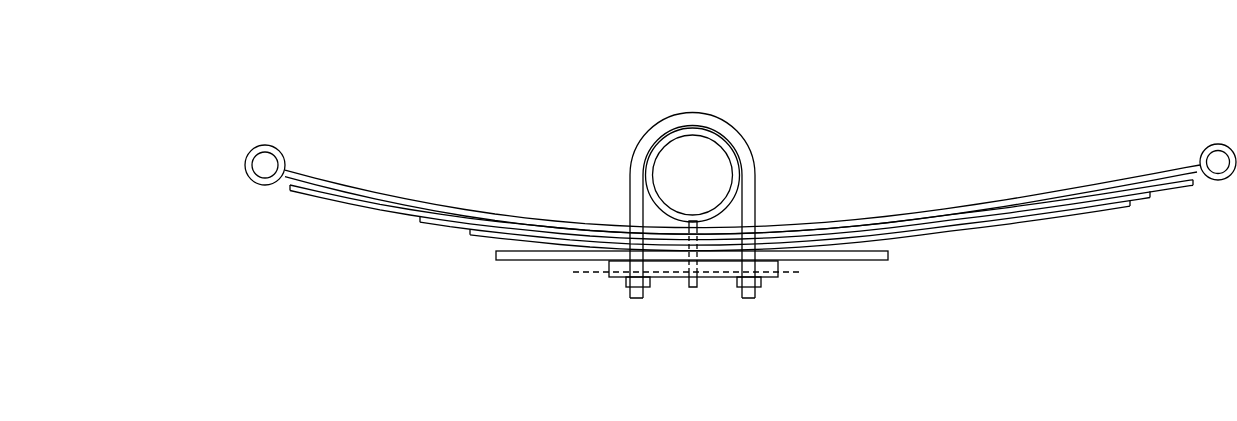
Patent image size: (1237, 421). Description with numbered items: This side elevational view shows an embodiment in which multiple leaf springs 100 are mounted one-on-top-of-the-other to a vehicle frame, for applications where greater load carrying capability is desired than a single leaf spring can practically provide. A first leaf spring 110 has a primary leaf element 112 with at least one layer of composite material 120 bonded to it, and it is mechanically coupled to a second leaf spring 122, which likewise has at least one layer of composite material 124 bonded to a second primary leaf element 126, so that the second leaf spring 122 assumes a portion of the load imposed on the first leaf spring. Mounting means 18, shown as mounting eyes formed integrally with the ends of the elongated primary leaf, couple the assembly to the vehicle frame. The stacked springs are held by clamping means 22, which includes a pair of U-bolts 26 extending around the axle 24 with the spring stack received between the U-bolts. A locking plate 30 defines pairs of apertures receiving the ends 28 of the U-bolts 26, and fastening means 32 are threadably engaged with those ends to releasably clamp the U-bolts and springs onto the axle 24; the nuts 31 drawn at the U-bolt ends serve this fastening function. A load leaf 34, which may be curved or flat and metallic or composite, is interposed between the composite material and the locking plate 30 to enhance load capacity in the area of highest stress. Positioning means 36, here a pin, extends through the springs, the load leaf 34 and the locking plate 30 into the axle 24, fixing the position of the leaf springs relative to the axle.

The mounting means 18 is at (276, 147).
The clamping means 22 is at (691, 199).
The axle 24 is at (718, 137).
The U-bolts 26 is at (633, 160).
The ends of the U-bolts 28 is at (637, 298).
The locking plate 30 is at (664, 270).
The nuts 31 is at (625, 283).
The fastening means 32 is at (686, 274).
The load leaf 34 is at (520, 261).
The positioning means 36 is at (692, 289).
The multiple leaf springs 100 is at (740, 228).
The leaf spring 110 is at (740, 188).
The primary leaf element 112 is at (982, 205).
The layer of composite material 120 is at (905, 224).
The second leaf spring 122 is at (326, 213).
The layer of composite material 124 is at (493, 233).
The second primary leaf element 126 is at (421, 214).